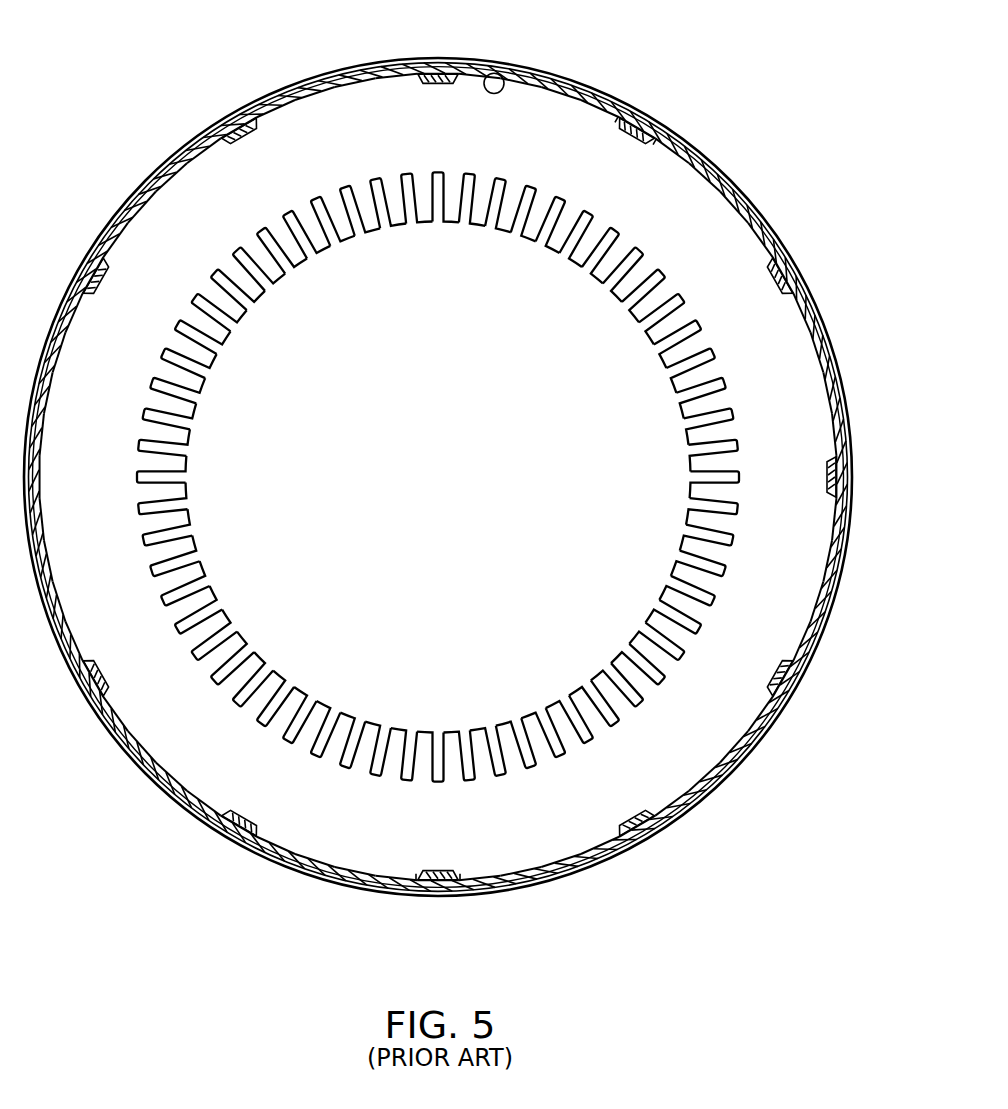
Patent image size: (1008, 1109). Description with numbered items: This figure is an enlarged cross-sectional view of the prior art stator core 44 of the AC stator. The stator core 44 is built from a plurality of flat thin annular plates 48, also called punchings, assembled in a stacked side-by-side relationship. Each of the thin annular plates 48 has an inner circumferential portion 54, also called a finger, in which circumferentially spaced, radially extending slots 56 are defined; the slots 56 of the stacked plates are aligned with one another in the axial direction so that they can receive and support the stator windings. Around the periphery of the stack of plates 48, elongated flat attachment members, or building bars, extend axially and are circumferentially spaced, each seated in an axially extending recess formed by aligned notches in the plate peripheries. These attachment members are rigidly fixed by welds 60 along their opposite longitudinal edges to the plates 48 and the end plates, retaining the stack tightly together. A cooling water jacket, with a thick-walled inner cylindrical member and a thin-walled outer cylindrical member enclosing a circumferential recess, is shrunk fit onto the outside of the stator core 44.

The stator core 44 is at (396, 72).
The flat thin annular plate 48 is at (706, 735).
The inner circumferential portion 54 is at (556, 236).
The radially-extending slot 56 is at (500, 196).
The weld 60 is at (614, 130).